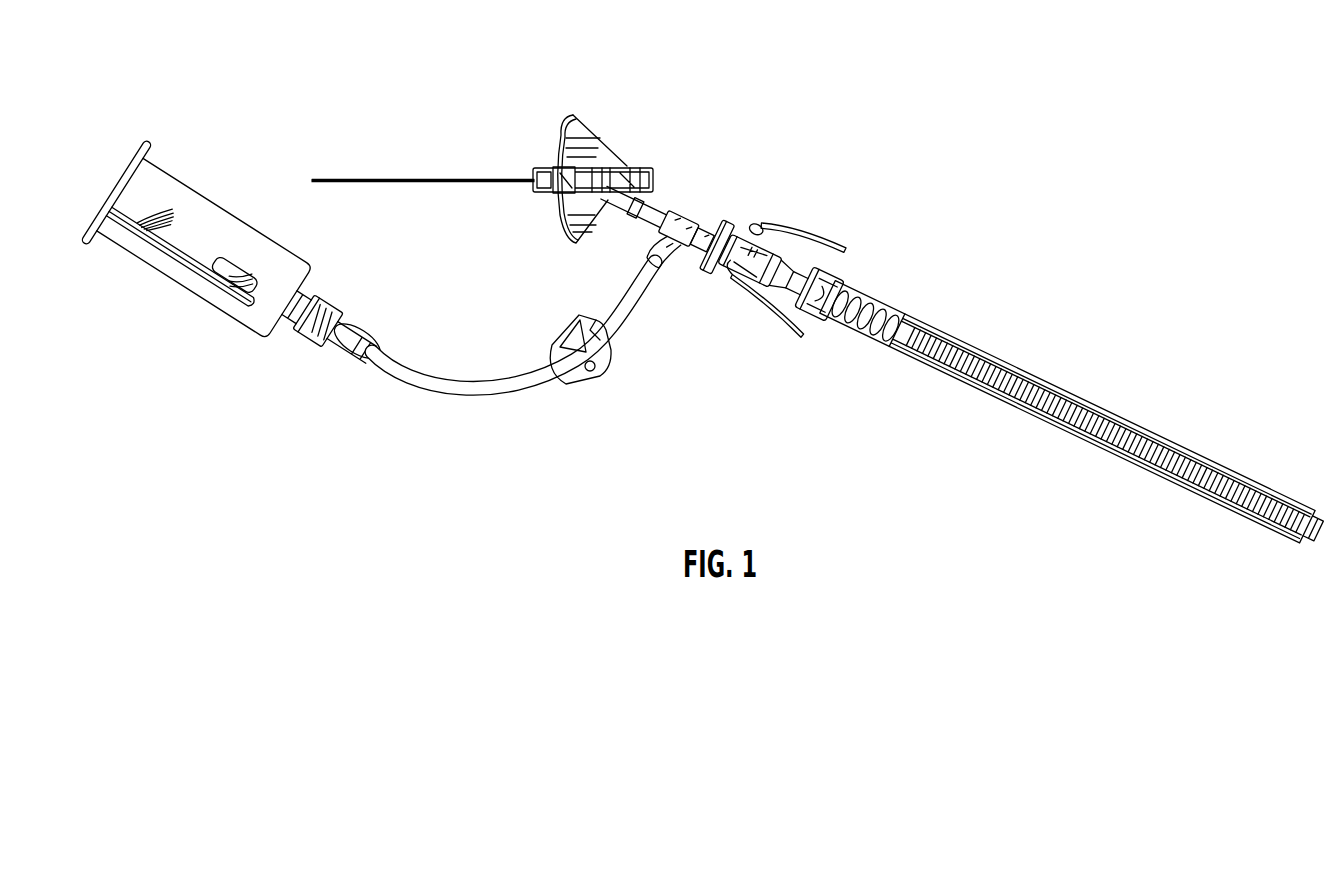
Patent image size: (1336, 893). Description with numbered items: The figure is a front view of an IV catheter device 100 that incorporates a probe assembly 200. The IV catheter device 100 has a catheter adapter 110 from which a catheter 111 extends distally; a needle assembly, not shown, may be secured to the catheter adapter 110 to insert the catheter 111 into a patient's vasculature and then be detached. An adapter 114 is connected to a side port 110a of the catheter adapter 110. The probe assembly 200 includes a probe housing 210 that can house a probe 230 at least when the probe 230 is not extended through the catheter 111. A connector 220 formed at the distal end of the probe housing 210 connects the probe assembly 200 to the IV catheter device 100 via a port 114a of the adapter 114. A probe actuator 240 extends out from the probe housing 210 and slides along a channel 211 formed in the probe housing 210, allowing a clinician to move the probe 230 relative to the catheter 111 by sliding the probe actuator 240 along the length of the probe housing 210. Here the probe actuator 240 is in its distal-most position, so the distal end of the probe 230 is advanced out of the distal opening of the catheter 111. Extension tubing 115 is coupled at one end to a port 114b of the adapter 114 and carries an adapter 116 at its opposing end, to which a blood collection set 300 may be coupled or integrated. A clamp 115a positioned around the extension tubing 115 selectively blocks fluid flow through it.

The IV catheter device 100 is at (1186, 70).
The catheter adapter 110 is at (633, 87).
The side port 110a is at (560, 236).
The catheter 111 is at (478, 178).
The adapter 114 is at (667, 210).
The port 114a is at (742, 245).
The port 114b is at (683, 258).
The extension tubing 115 is at (480, 385).
The clamp 115a is at (587, 392).
The adapter 116 is at (345, 360).
The probe assembly 200 is at (938, 294).
The probe housing 210 is at (994, 342).
The channel 211 is at (1062, 392).
The connector 220 is at (832, 250).
The probe 230 is at (320, 178).
The probe actuator 240 is at (876, 345).
The blood collection set 300 is at (160, 313).